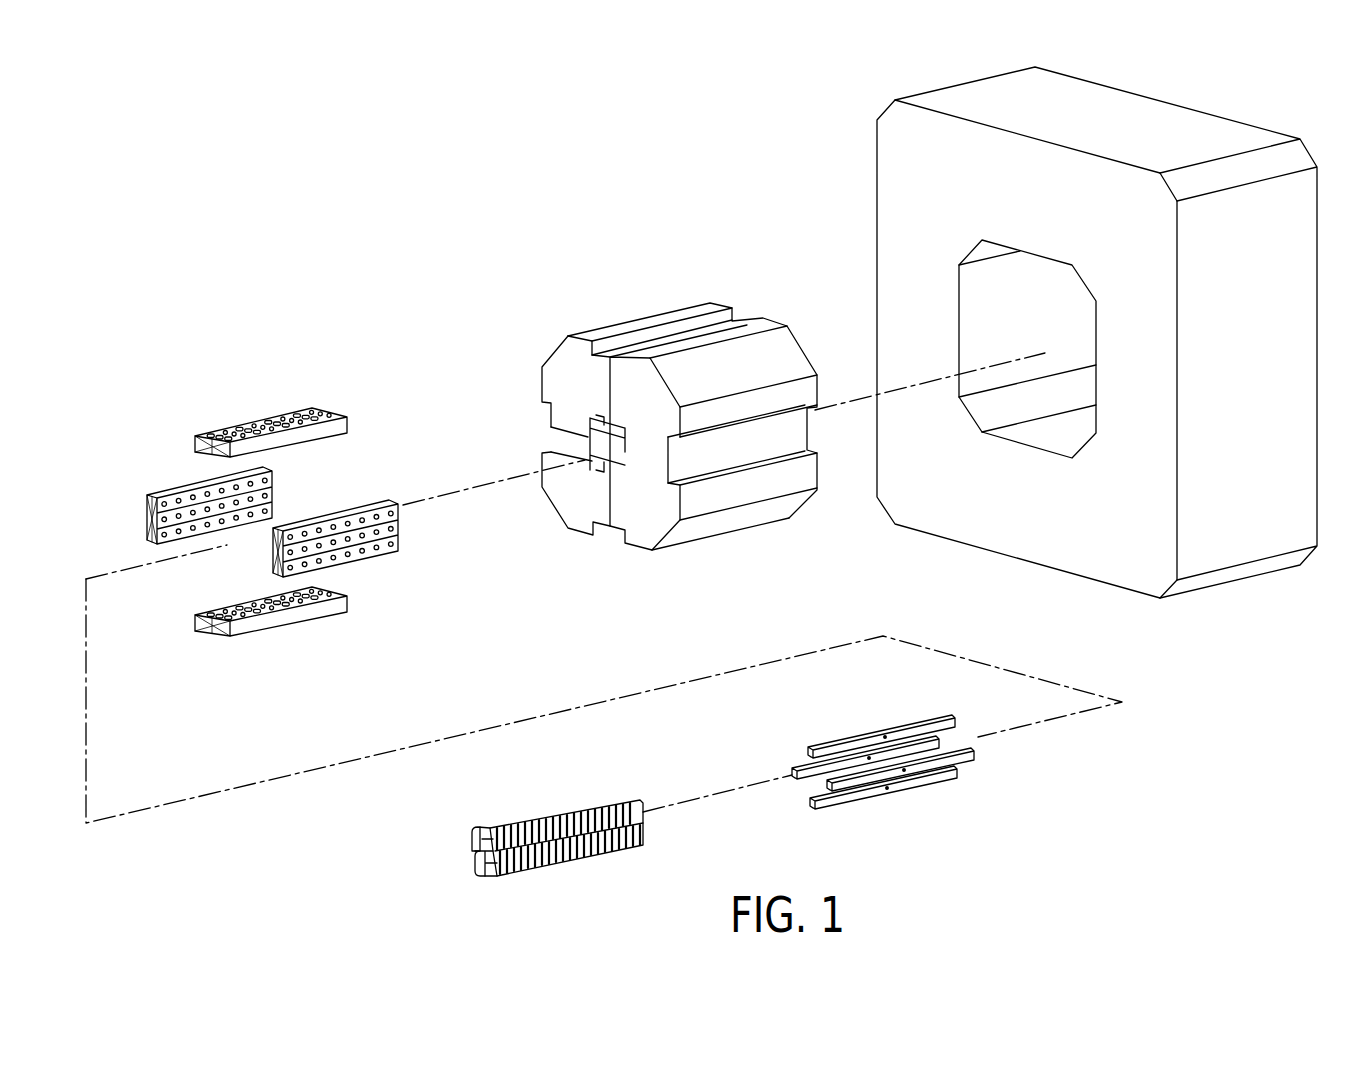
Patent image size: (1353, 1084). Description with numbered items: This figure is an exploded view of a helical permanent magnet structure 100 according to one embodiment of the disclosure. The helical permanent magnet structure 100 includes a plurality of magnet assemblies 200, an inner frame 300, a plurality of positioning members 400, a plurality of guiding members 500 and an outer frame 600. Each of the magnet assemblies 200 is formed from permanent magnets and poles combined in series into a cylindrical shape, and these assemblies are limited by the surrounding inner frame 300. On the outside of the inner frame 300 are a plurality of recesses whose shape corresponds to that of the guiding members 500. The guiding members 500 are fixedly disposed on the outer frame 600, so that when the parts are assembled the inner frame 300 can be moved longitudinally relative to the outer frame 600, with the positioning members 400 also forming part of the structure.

The helical permanent magnet structure 100 is at (179, 222).
The magnet assembly 200 is at (547, 810).
The inner frame 300 is at (620, 323).
The positioning member 400 is at (872, 733).
The guiding member 500 is at (255, 422).
The outer frame 600 is at (877, 189).